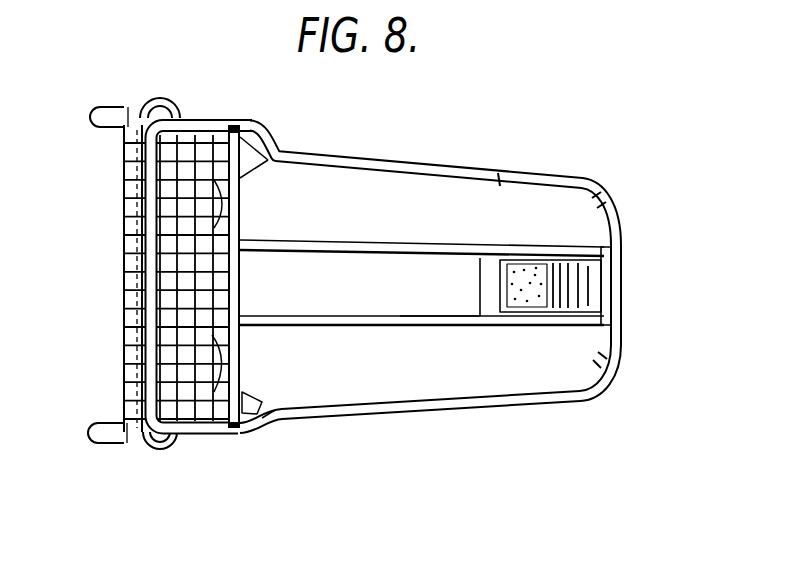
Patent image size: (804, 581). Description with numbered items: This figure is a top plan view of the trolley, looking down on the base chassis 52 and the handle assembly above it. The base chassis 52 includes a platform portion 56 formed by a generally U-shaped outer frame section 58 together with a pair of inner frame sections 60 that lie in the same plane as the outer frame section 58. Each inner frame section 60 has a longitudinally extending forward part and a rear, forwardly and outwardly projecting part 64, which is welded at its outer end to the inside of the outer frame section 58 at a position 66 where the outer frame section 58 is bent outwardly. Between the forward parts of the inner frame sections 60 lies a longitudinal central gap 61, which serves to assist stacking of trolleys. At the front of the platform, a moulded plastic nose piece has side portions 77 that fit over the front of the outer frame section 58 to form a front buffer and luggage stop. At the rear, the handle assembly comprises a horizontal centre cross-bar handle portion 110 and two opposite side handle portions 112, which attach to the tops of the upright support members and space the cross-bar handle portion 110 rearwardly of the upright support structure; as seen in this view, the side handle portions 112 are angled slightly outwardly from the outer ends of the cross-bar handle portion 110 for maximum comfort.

The base chassis 52 is at (473, 328).
The platform portion 56 is at (481, 158).
The outer frame section 58 is at (555, 180).
The inner frame sections 60 is at (367, 234).
The longitudinal central gap 61 is at (410, 292).
The rear, forwardly and outwardly projecting part 64 is at (246, 398).
The position 66 is at (262, 418).
The side portions 77 is at (607, 354).
The cross-bar handle portion 110 is at (152, 256).
The side handle portions 112 is at (210, 111).